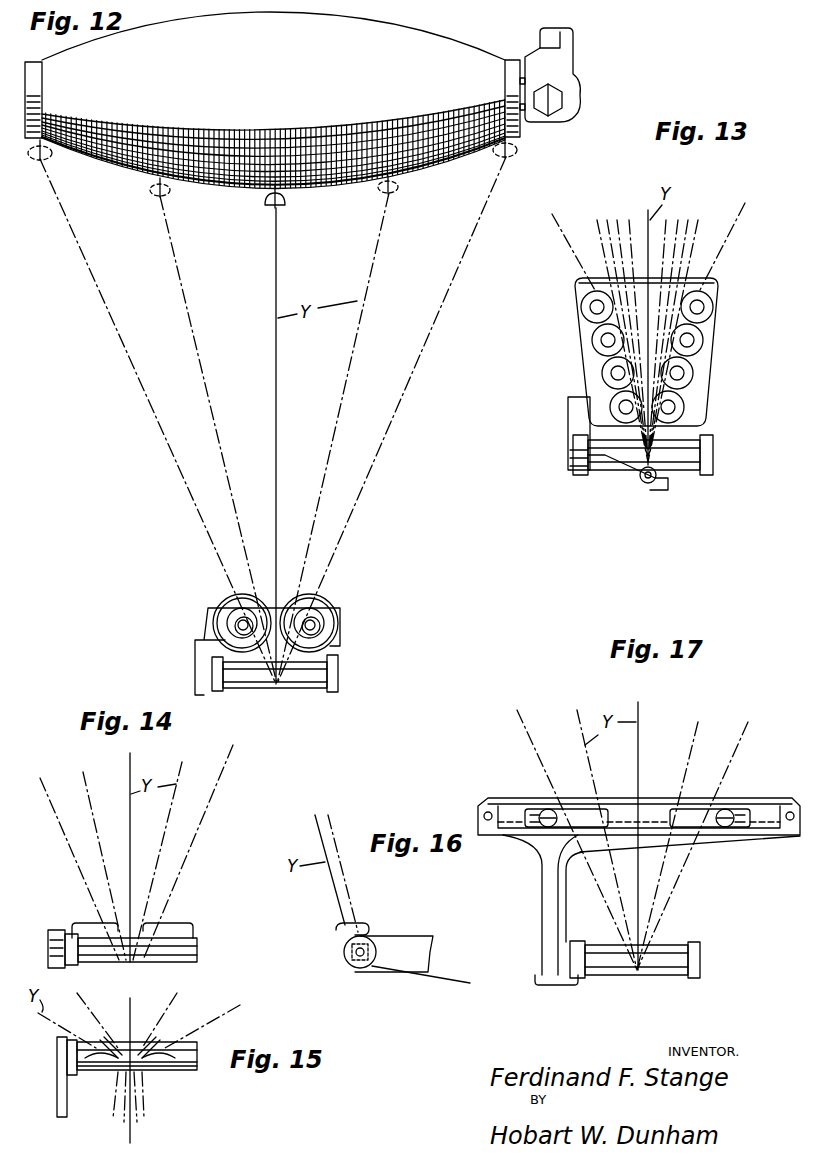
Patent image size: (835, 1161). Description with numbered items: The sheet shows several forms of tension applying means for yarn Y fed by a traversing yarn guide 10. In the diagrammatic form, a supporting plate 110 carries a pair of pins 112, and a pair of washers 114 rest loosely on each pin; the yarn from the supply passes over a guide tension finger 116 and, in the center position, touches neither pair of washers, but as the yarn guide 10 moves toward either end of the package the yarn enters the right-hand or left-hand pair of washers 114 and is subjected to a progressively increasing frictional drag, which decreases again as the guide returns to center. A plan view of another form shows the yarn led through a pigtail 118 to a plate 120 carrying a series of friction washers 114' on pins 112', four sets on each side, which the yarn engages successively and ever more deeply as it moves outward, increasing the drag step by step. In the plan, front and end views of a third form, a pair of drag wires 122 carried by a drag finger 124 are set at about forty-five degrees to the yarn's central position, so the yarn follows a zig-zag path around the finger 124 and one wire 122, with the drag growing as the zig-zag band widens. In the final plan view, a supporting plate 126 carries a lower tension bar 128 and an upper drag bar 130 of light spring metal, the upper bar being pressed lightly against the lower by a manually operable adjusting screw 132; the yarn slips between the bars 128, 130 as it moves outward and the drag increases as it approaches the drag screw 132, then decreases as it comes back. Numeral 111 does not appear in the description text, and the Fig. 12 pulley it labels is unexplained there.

In FIG. 12, the yarn guide 10 is at (288, 204).
In FIG. 12, the supporting plate 110 is at (342, 624).
In FIG. 12, the left pulley 111 is at (222, 622).
In FIG. 12, the pins 112 is at (270, 635).
In FIG. 12, the washers 114 is at (333, 614).
In FIG. 12, the guide tension finger 116 is at (260, 690).
In FIG. 13, the guide tension finger 116 is at (710, 450).
In FIG. 17, the guide tension finger 116 is at (672, 948).
In FIG. 13, the friction washers 114' is at (679, 340).
In FIG. 13, the pins 112' is at (685, 373).
In FIG. 13, the plate 120 is at (705, 393).
In FIG. 13, the pigtail 118 is at (660, 490).
In FIG. 14, the drag wires 122 is at (85, 923).
In FIG. 15, the drag wires 122 is at (118, 1042).
In FIG. 16, the drag wires 122 is at (350, 928).
In FIG. 14, the drag finger 124 is at (185, 962).
In FIG. 15, the drag finger 124 is at (182, 1072).
In FIG. 16, the drag finger 124 is at (355, 975).
In FIG. 17, the supporting plate 126 is at (650, 798).
In FIG. 17, the lower tension bar 128 is at (690, 805).
In FIG. 17, the upper drag bar 130 is at (692, 830).
In FIG. 17, the adjusting screw 132 is at (730, 812).